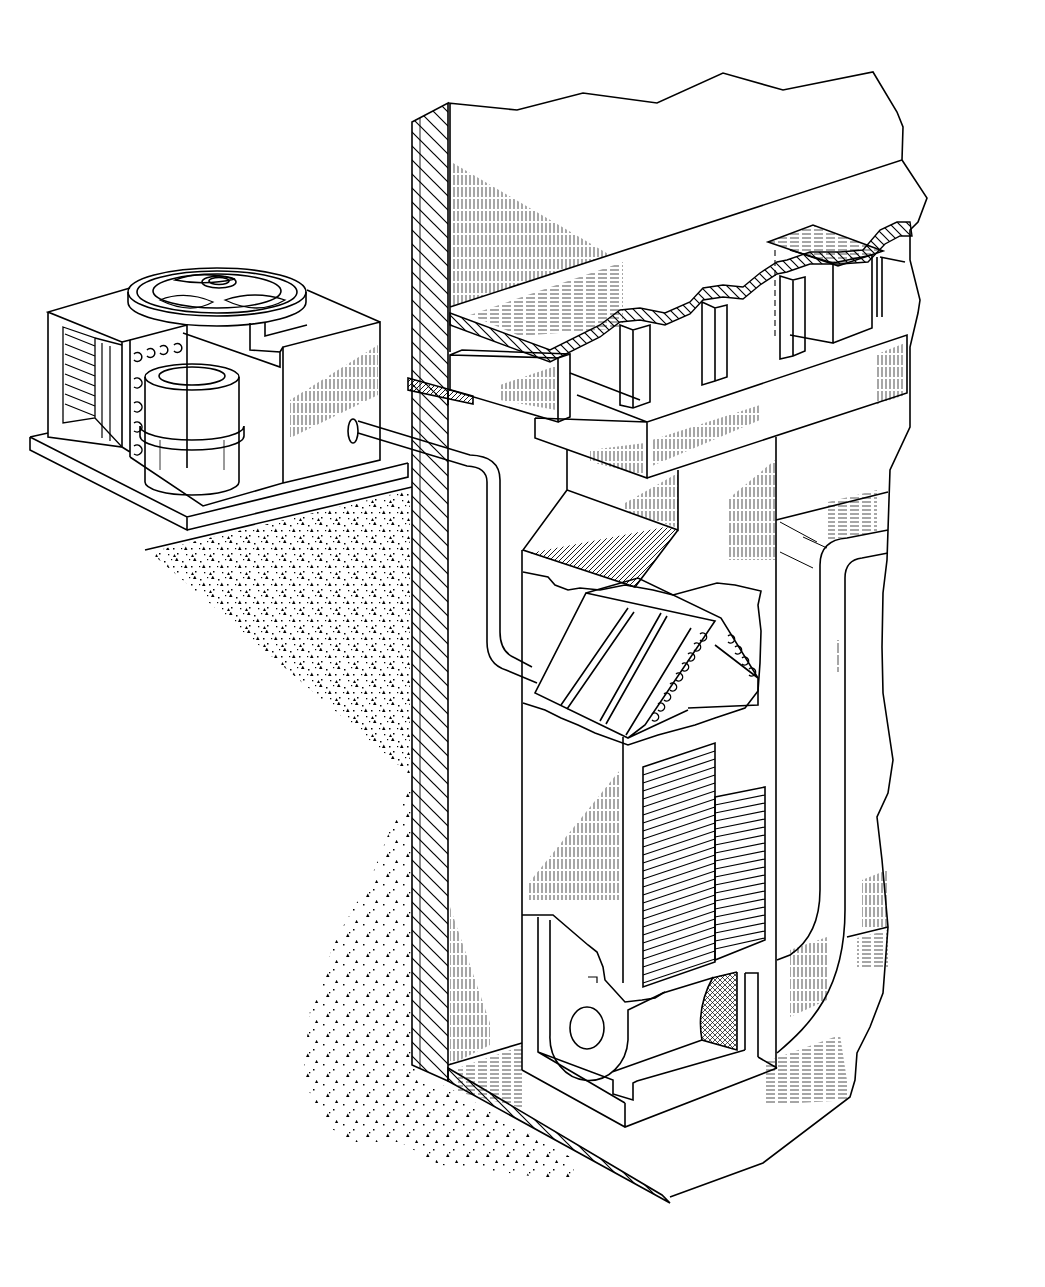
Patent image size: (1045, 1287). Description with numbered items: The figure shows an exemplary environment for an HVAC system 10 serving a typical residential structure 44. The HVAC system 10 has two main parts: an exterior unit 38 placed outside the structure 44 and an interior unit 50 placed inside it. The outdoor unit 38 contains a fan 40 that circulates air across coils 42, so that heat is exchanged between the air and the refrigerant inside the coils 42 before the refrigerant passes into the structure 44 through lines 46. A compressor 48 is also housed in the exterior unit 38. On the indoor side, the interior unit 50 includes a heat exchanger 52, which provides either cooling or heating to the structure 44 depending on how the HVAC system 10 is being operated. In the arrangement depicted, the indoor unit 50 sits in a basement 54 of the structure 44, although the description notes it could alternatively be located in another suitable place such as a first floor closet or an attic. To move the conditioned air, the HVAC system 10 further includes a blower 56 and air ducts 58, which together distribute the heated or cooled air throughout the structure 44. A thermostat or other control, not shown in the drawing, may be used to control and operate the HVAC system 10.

The HVAC system 10 is at (185, 134).
The exterior unit 38 is at (151, 260).
The fan 40 is at (240, 290).
The coils 42 is at (130, 350).
The structure 44 is at (567, 148).
The lines 46 is at (492, 542).
The compressor 48 is at (185, 465).
The interior unit 50 is at (514, 822).
The heat exchanger 52 is at (590, 695).
The basement 54 is at (480, 973).
The blower 56 is at (570, 1050).
The air ducts 58 is at (848, 308).